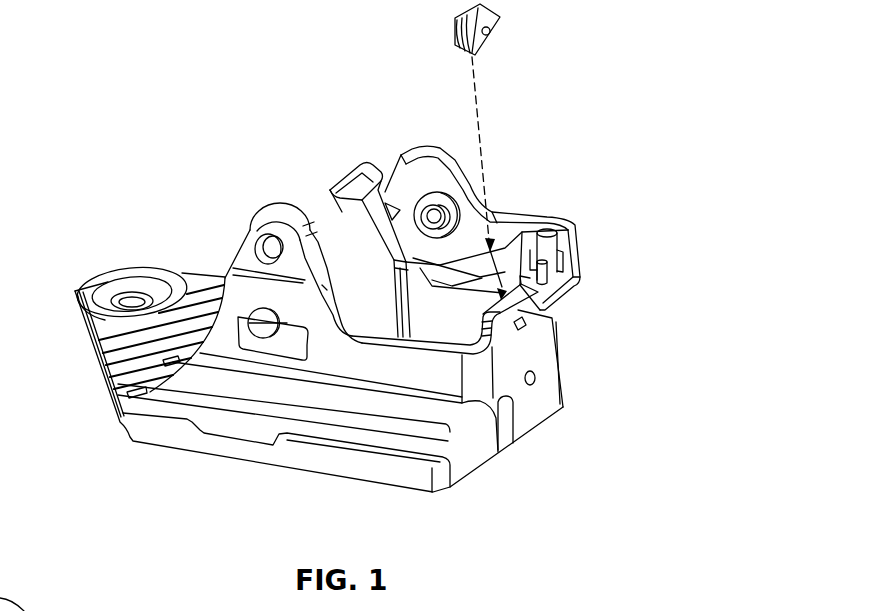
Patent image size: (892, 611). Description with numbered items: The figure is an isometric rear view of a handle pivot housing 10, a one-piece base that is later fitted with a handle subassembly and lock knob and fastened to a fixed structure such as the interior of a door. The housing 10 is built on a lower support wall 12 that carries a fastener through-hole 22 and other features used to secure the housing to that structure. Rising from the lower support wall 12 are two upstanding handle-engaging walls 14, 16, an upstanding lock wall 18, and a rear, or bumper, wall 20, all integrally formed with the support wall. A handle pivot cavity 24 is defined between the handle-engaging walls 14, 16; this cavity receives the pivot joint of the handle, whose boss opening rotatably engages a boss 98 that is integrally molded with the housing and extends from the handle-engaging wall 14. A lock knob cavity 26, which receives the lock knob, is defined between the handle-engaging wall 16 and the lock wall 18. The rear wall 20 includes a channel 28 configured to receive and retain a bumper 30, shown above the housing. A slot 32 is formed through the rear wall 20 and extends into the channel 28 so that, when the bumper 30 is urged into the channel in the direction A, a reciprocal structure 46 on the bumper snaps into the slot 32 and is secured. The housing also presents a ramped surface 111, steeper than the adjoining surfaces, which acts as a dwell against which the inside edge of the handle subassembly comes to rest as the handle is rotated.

The handle pivot housing 10 is at (128, 38).
The lower support wall 12 is at (267, 467).
The handle-engaging wall 14 is at (248, 235).
The handle-engaging wall 16 is at (360, 173).
The lock wall 18 is at (436, 150).
The rear wall 20 is at (547, 360).
The fastener through-hole 22 is at (132, 300).
The handle pivot cavity 24 is at (329, 214).
The lock knob cavity 26 is at (414, 182).
The channel 28 is at (540, 232).
The bumper 30 is at (502, 20).
The slot 32 is at (527, 320).
The reciprocal structure 46 is at (488, 34).
The boss 98 is at (282, 208).
The ramped surface 111 is at (430, 290).
The direction A is at (478, 123).